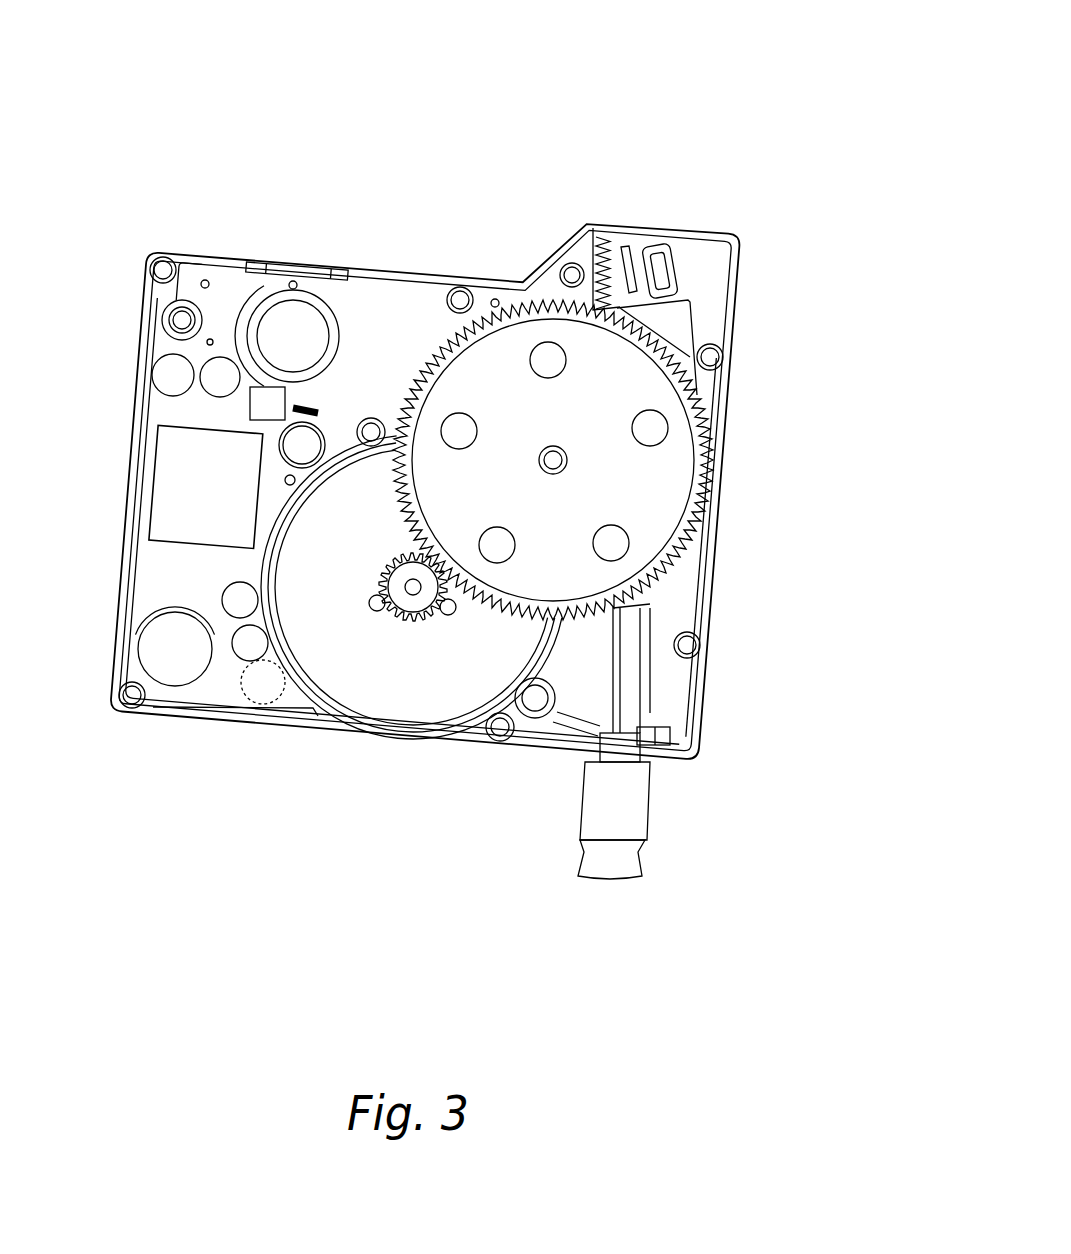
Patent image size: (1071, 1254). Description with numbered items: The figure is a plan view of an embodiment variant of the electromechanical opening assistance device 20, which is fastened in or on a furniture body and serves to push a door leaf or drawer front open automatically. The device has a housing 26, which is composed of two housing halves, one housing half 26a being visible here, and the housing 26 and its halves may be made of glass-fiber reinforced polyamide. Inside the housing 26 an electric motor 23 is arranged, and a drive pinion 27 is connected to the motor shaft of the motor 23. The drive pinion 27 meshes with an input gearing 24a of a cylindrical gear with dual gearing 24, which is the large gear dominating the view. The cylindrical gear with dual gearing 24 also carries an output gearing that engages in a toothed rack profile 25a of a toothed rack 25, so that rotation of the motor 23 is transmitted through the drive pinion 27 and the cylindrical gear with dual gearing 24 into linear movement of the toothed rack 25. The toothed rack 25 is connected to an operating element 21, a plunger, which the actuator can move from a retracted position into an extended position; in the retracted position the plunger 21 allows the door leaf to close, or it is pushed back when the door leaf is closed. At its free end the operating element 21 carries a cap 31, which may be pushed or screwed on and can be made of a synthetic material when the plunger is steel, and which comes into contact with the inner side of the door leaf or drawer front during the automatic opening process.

The electromechanical opening assistance device 20 is at (432, 490).
The operating element 21 is at (623, 705).
The electric motor 23 is at (383, 688).
The cylindrical gear with dual gearing 24 is at (607, 472).
The input gearing 24a is at (660, 575).
The toothed rack 25 is at (533, 212).
The toothed rack profile 25a is at (622, 257).
The housing 26 is at (125, 462).
The housing half 26a is at (710, 256).
The drive pinion 27 is at (400, 590).
The cap 31 is at (613, 872).